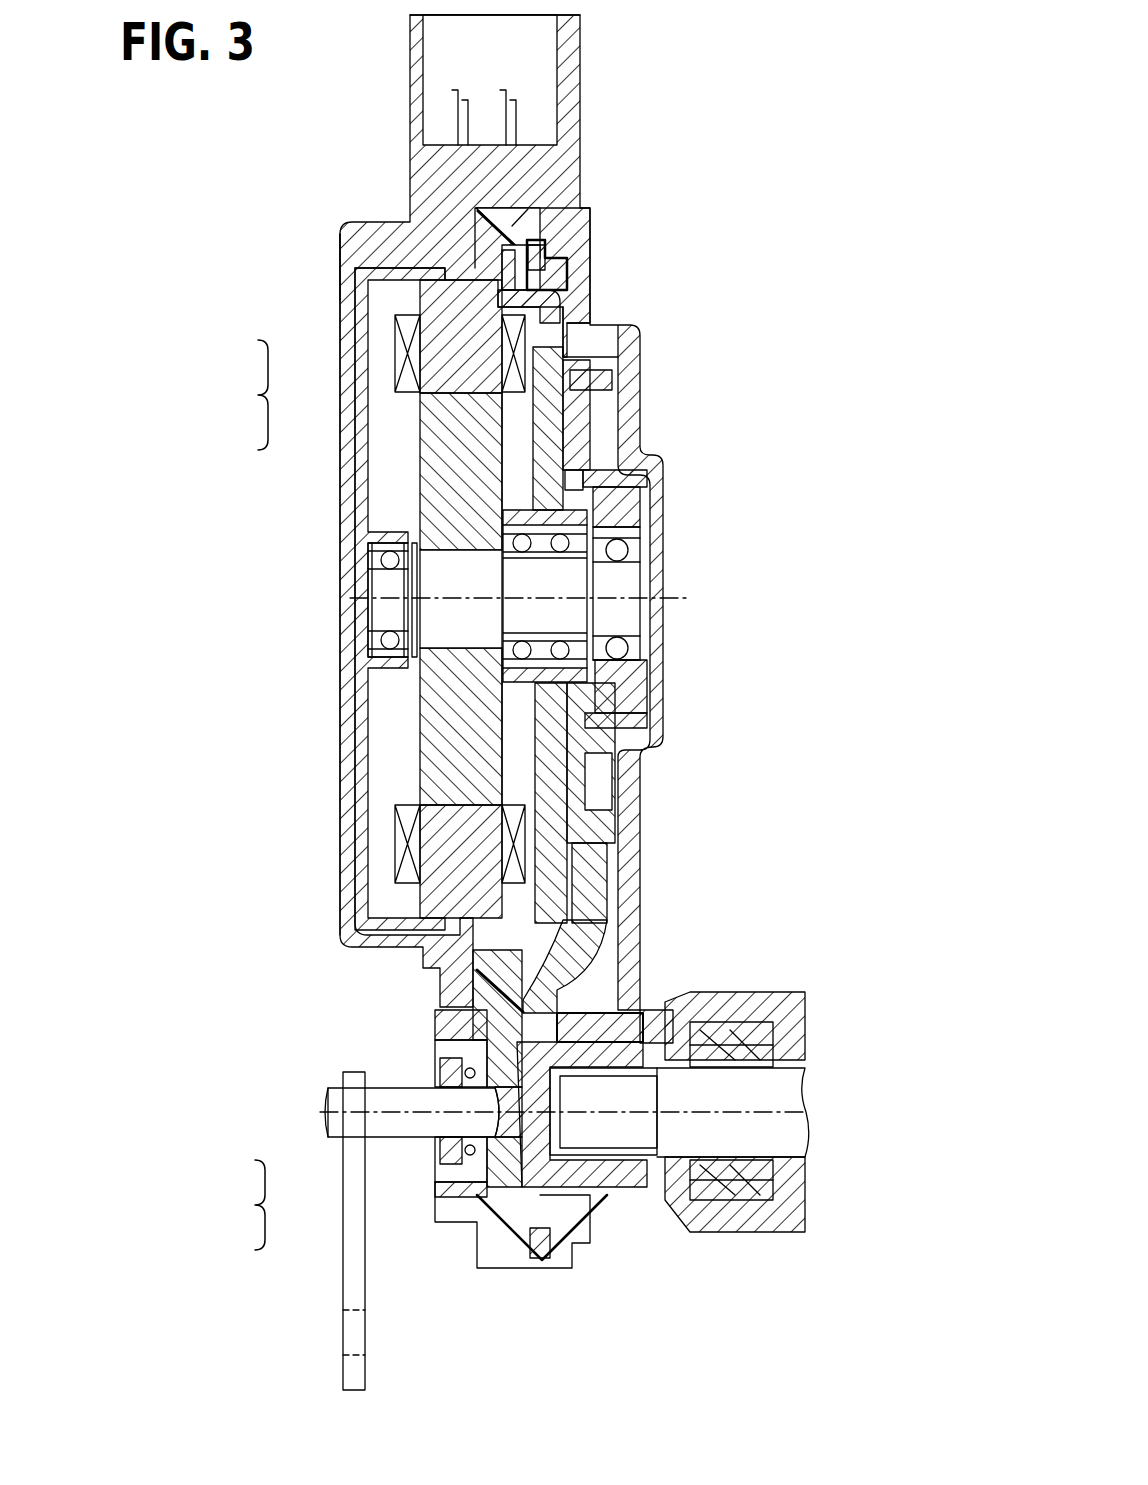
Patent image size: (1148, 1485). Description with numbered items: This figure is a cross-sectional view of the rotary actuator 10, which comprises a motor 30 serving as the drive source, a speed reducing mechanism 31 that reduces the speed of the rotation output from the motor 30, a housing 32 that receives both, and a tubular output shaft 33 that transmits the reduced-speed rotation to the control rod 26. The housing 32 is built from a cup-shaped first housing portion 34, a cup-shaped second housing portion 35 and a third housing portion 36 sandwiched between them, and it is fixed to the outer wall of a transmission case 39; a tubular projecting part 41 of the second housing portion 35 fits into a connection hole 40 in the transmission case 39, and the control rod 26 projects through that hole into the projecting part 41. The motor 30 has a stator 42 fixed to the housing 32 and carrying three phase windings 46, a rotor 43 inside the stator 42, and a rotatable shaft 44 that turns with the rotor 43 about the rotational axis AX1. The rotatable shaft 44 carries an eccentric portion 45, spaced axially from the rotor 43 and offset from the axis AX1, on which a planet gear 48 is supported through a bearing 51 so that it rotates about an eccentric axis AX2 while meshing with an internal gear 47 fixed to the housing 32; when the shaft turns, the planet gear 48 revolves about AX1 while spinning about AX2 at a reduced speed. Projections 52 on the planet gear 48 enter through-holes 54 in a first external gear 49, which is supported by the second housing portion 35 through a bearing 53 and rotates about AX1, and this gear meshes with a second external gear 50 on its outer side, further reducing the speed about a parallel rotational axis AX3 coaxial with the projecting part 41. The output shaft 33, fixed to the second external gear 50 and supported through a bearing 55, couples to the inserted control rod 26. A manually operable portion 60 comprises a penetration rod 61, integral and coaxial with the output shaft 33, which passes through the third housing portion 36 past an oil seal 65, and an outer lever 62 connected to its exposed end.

The actuator 10 is at (622, 92).
The control rod 26 is at (778, 1095).
The motor 30 is at (336, 599).
The speed reducing mechanism 31 is at (602, 355).
The housing 32 is at (381, 214).
The output shaft 33 is at (583, 1168).
The first housing portion 34 is at (345, 250).
The second housing portion 35 is at (565, 232).
The third housing portion 36 is at (515, 218).
The transmission case 39 is at (785, 1000).
The connection hole 40 is at (702, 1030).
The projecting part 41 is at (677, 1183).
The stator 42 is at (455, 365).
The rotor 43 is at (450, 440).
The rotatable shaft 44 is at (462, 625).
The eccentric portion 45 is at (562, 578).
The three phase windings 46 is at (405, 328).
The internal gear 47 is at (556, 310).
The planet gear 48 is at (550, 705).
The first external gear 49 is at (577, 778).
The second external gear 50 is at (588, 868).
The bearing 51 is at (500, 535).
The projections 52 is at (573, 440).
The bearing 53 is at (640, 480).
The through-holes 54 is at (572, 470).
The bearing 55 is at (622, 1190).
The manually operable portion 60 is at (360, 1231).
The penetration rod 61 is at (402, 1125).
The outer lever 62 is at (352, 1237).
The oil seal 65 is at (455, 1060).
The rotational axis AX1 is at (380, 598).
The eccentric axis AX2 is at (570, 585).
The rotational axis AX3 is at (335, 1112).